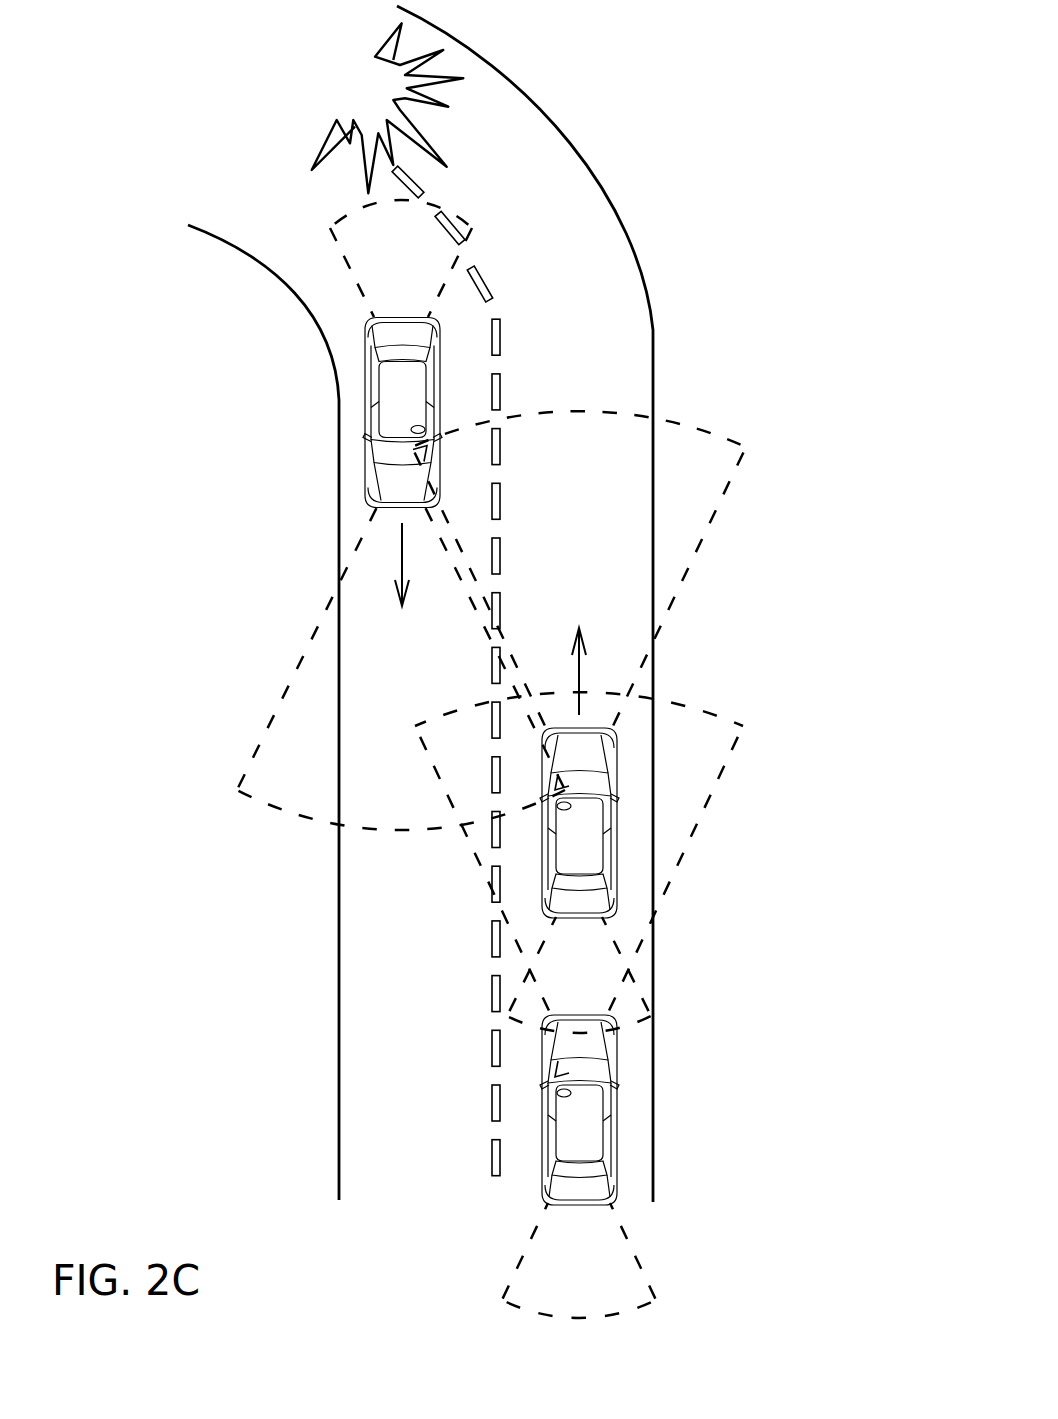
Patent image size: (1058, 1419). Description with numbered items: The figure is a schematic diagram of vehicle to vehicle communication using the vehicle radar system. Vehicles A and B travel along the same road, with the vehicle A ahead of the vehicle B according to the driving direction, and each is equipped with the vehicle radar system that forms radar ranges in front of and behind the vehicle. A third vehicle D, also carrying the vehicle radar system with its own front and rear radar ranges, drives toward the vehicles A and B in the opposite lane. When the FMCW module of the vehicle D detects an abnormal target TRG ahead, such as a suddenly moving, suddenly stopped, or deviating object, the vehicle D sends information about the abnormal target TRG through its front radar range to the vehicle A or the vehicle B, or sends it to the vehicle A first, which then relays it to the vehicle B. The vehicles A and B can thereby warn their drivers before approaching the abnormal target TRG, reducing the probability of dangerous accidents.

The abnormal target TRG is at (392, 99).
The vehicle D is at (299, 413).
The vehicle A is at (716, 823).
The vehicle B is at (711, 1110).